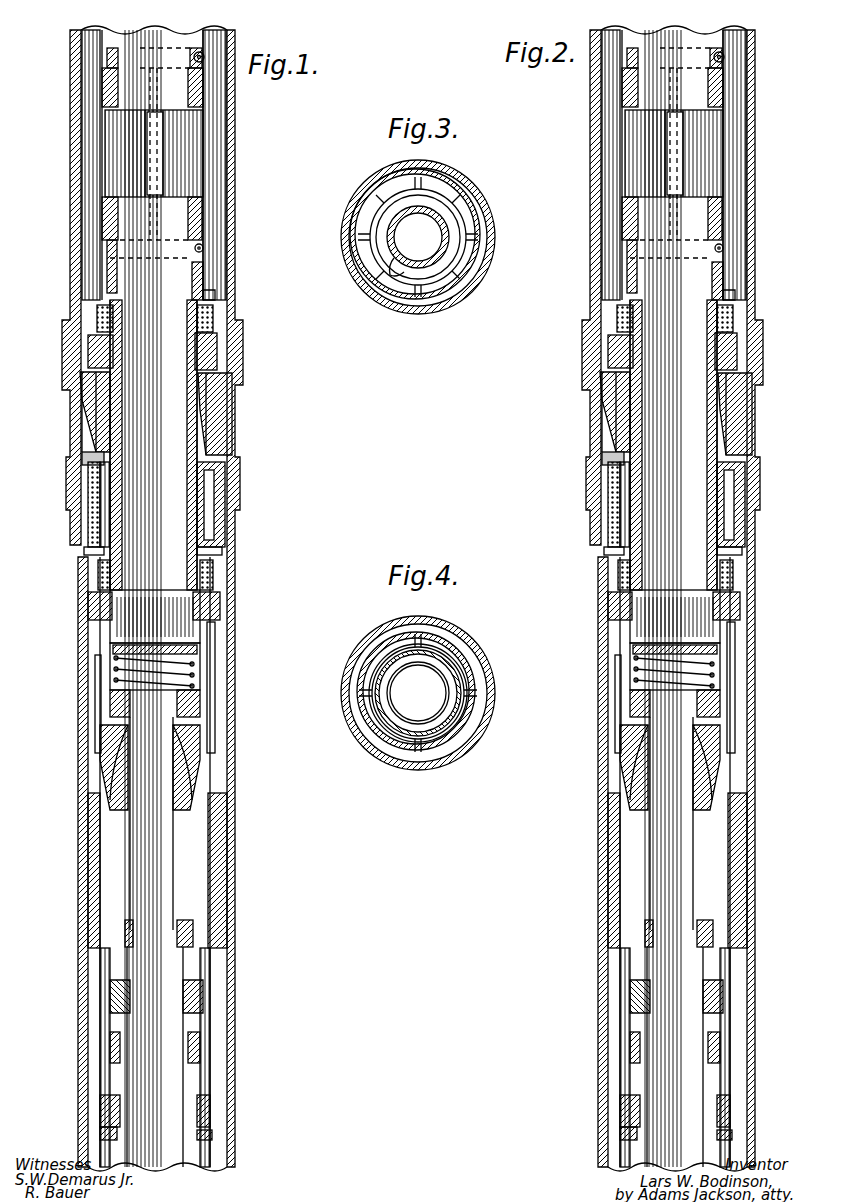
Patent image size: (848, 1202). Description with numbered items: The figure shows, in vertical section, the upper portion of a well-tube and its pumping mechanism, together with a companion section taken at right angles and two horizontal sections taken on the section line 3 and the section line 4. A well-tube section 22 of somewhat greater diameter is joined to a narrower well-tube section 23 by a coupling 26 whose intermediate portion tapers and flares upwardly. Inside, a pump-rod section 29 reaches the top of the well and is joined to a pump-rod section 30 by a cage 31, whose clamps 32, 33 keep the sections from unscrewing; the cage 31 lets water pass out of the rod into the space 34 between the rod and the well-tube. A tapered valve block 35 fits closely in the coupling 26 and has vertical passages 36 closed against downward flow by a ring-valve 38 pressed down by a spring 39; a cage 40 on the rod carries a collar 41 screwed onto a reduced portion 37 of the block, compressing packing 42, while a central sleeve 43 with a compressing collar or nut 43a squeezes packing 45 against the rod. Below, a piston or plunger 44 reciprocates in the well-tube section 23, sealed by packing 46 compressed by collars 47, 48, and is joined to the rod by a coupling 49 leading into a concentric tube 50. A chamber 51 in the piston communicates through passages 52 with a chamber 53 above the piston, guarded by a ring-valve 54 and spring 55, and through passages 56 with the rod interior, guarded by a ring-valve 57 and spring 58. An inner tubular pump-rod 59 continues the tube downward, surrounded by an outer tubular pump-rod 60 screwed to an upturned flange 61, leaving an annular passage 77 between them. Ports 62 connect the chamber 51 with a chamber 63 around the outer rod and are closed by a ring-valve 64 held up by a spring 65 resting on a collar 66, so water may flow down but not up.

In FIG. 1, the section line 3— 3 is at (64, 745).
In FIG. 1, the section line 4— 4 is at (66, 1045).
In FIG. 1, the well-tube section 22 is at (234, 205).
In FIG. 2, the well-tube section 22 is at (754, 205).
In FIG. 1, the well-tube section 23 is at (232, 643).
In FIG. 2, the well-tube section 23 is at (752, 632).
In FIG. 3, the well-tube section 23 is at (466, 303).
In FIG. 4, the well-tube section 23 is at (462, 758).
In FIG. 1, the coupling 26 is at (232, 415).
In FIG. 2, the coupling 26 is at (753, 383).
In FIG. 1, the pump-rod section 29 is at (202, 52).
In FIG. 2, the pump-rod section 29 is at (710, 45).
In FIG. 1, the pump-rod section 30 is at (195, 265).
In FIG. 2, the pump-rod section 30 is at (716, 455).
In FIG. 1, the cage 31 is at (207, 128).
In FIG. 2, the cage 31 is at (731, 130).
In FIG. 1, the clamp 32 is at (205, 55).
In FIG. 2, the clamp 32 is at (723, 57).
In FIG. 1, the clamp 33 is at (203, 248).
In FIG. 2, the clamp 33 is at (723, 250).
In FIG. 1, the space 34 is at (213, 165).
In FIG. 2, the space 34 is at (734, 152).
In FIG. 1, the valve block 35 is at (208, 440).
In FIG. 2, the valve block 35 is at (746, 408).
In FIG. 1, the vertical passages 36 is at (100, 432).
In FIG. 2, the vertical passages 36 is at (729, 432).
In FIG. 1, the reduced portion 37 is at (190, 397).
In FIG. 2, the reduced portion 37 is at (717, 388).
In FIG. 1, the ring-valve 38 is at (205, 350).
In FIG. 2, the ring-valve 38 is at (721, 350).
In FIG. 1, the spring 39 is at (207, 317).
In FIG. 2, the spring 39 is at (723, 318).
In FIG. 1, the cage 40 is at (210, 296).
In FIG. 2, the cage 40 is at (726, 282).
In FIG. 1, the collar 41 is at (82, 380).
In FIG. 1, the packing 42 is at (84, 408).
In FIG. 1, the sleeve 43 is at (226, 490).
In FIG. 2, the sleeve 43 is at (743, 465).
In FIG. 1, the compressing collar or nut 43a is at (236, 505).
In FIG. 2, the compressing collar or nut 43a is at (745, 510).
In FIG. 1, the piston or plunger 44 is at (223, 692).
In FIG. 2, the piston or plunger 44 is at (743, 660).
In FIG. 3, the piston or plunger 44 is at (396, 308).
In FIG. 4, the piston or plunger 44 is at (418, 764).
In FIG. 1, the packing 45 is at (212, 520).
In FIG. 2, the packing 45 is at (721, 505).
In FIG. 1, the packing 46 is at (215, 830).
In FIG. 2, the packing 46 is at (741, 830).
In FIG. 1, the collar 47 is at (215, 918).
In FIG. 1, the collar 48 is at (190, 935).
In FIG. 1, the coupling 49 is at (215, 600).
In FIG. 2, the coupling 49 is at (723, 600).
In FIG. 1, the concentric tube 50 is at (127, 862).
In FIG. 2, the concentric tube 50 is at (661, 866).
In FIG. 3, the concentric tube 50 is at (444, 238).
In FIG. 1, the chamber 51 is at (197, 877).
In FIG. 2, the chamber 51 is at (641, 870).
In FIG. 1, the passages 52 is at (197, 733).
In FIG. 2, the passages 52 is at (731, 707).
In FIG. 3, the passages 52 is at (360, 237).
In FIG. 1, the chamber 53 is at (215, 580).
In FIG. 2, the chamber 53 is at (733, 580).
In FIG. 1, the ring-valve 54 is at (200, 610).
In FIG. 2, the ring-valve 54 is at (736, 620).
In FIG. 1, the spring 55 is at (210, 552).
In FIG. 2, the spring 55 is at (729, 548).
In FIG. 1, the passages 56 is at (195, 760).
In FIG. 2, the passages 56 is at (713, 740).
In FIG. 3, the passages 56 is at (372, 285).
In FIG. 1, the ring-valve 57 is at (205, 690).
In FIG. 2, the ring-valve 57 is at (723, 690).
In FIG. 1, the spring 58 is at (152, 668).
In FIG. 2, the spring 58 is at (672, 668).
In FIG. 1, the inner tubular pump-rod 59 is at (185, 1008).
In FIG. 2, the inner tubular pump-rod 59 is at (649, 1062).
In FIG. 4, the inner tubular pump-rod 59 is at (396, 703).
In FIG. 1, the outer tubular pump-rod 60 is at (197, 1085).
In FIG. 2, the outer tubular pump-rod 60 is at (723, 1060).
In FIG. 4, the outer tubular pump-rod 60 is at (405, 740).
In FIG. 1, the upturned flange 61 is at (197, 1025).
In FIG. 2, the upturned flange 61 is at (721, 1035).
In FIG. 4, the upturned flange 61 is at (388, 725).
In FIG. 1, the ports 62 is at (200, 1070).
In FIG. 2, the ports 62 is at (623, 1065).
In FIG. 4, the ports 62 is at (455, 737).
In FIG. 1, the chamber 63 is at (212, 1115).
In FIG. 2, the chamber 63 is at (726, 1085).
In FIG. 1, the ring-valve 64 is at (100, 1110).
In FIG. 2, the ring-valve 64 is at (623, 1107).
In FIG. 1, the spring 65 is at (197, 1132).
In FIG. 2, the spring 65 is at (721, 1125).
In FIG. 1, the collar 66 is at (115, 1143).
In FIG. 2, the collar 66 is at (736, 1145).
In FIG. 1, the annular passage 77 is at (186, 1167).
In FIG. 2, the annular passage 77 is at (631, 1162).